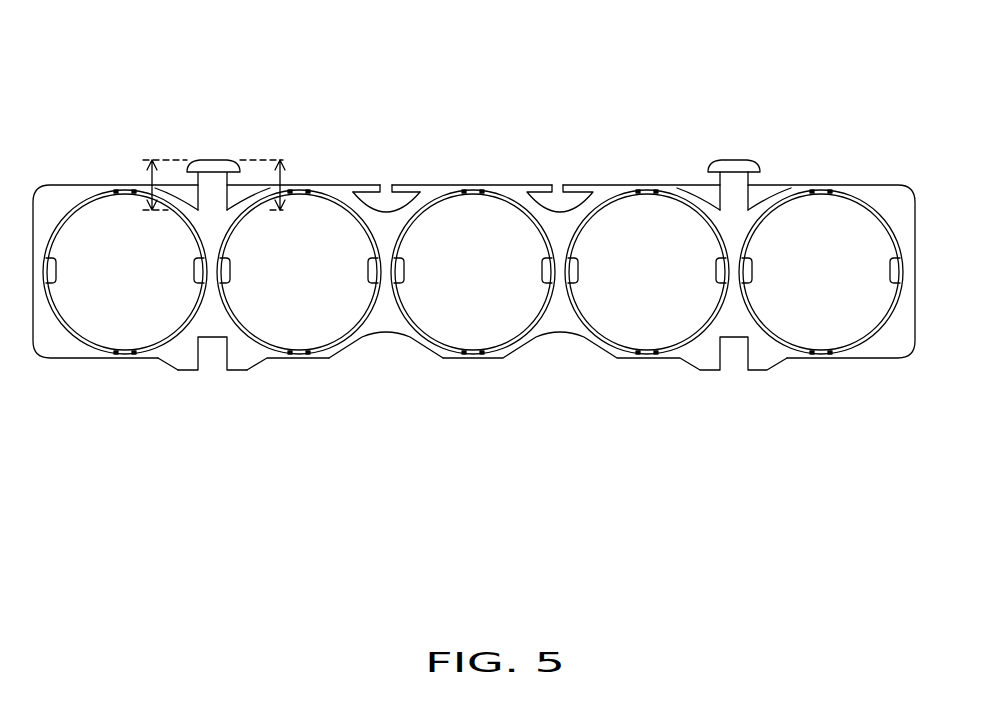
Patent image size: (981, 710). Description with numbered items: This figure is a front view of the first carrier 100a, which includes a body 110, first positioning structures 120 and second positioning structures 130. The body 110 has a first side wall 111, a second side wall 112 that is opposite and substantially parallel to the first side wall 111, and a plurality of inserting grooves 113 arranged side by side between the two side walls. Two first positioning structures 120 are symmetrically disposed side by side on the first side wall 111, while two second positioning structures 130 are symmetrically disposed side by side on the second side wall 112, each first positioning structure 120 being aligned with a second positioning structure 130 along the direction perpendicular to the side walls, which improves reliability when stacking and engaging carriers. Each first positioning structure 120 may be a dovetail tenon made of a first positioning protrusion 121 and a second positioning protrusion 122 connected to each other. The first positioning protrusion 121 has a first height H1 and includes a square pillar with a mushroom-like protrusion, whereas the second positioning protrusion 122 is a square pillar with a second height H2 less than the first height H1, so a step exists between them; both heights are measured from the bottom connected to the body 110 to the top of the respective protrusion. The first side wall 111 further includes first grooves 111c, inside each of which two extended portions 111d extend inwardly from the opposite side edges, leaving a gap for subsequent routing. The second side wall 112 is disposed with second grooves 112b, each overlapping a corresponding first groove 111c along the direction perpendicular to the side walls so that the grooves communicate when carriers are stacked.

The first carrier 100a is at (891, 464).
The body 110 is at (915, 225).
The first side wall 111 is at (830, 177).
The first groove 111c is at (417, 201).
The extended portion 111d is at (398, 190).
The second side wall 112 is at (133, 370).
The second groove 112b is at (387, 377).
The inserting groove 113 is at (99, 322).
The first positioning structure 120 is at (774, 118).
The first positioning protrusion 121 is at (722, 160).
The second positioning protrusion 122 is at (748, 177).
The second positioning structure 130 is at (220, 378).
The first height H1 is at (283, 185).
The second height H2 is at (147, 185).